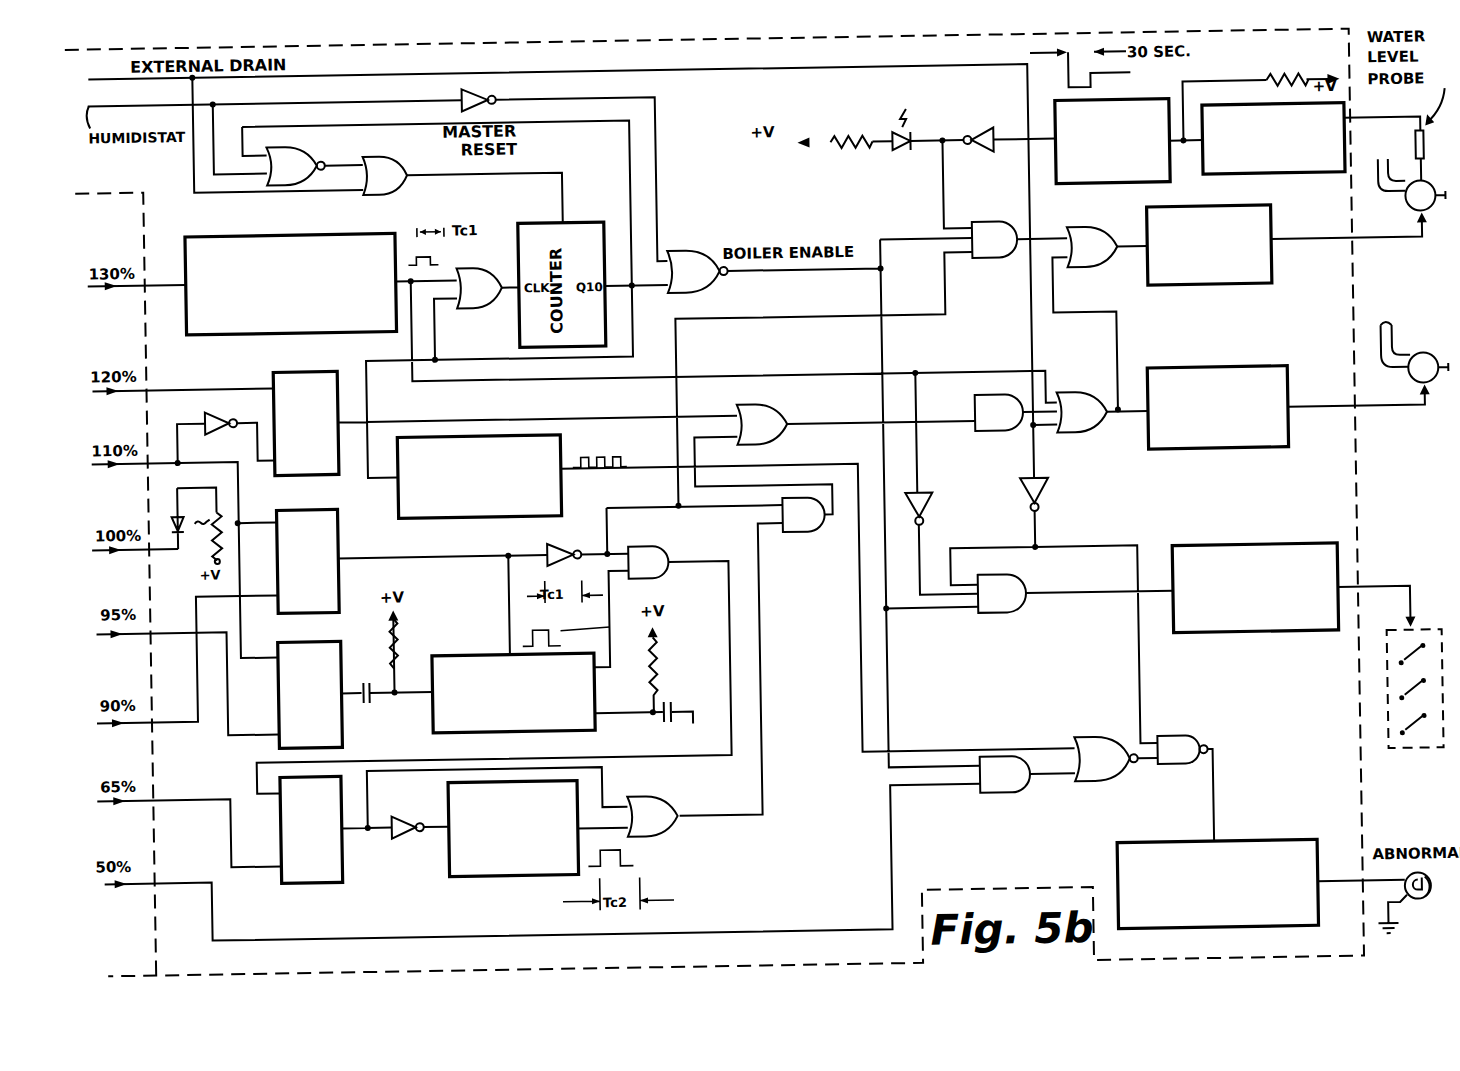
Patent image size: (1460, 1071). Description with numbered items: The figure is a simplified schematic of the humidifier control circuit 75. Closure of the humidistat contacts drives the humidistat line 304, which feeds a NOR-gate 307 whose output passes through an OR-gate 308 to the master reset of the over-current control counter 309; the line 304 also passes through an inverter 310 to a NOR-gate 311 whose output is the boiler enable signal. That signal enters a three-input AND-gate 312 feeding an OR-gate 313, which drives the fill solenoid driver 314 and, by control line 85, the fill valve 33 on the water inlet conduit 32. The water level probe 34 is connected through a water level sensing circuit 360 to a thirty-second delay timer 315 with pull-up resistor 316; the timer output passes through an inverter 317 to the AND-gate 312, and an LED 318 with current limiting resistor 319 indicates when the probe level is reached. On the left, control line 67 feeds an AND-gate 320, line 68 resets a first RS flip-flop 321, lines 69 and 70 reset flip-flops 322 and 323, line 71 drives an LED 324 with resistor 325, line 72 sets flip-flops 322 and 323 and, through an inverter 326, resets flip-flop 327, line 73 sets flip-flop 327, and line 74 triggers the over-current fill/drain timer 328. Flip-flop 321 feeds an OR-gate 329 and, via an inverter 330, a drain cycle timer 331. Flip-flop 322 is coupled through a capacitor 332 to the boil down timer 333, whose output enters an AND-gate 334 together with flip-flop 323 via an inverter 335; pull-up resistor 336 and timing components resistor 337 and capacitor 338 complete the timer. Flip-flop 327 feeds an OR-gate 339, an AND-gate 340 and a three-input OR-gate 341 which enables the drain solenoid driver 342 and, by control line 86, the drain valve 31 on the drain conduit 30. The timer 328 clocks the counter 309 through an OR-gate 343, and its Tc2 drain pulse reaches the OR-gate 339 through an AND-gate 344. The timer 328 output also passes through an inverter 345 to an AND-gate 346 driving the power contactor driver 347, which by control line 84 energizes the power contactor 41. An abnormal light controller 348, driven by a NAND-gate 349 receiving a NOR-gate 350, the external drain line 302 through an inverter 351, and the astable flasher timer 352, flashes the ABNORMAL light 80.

The external drain control line 302 is at (176, 82).
The humidistat line 304 is at (211, 108).
The two-input NOR-gate 307 is at (296, 158).
The two-input OR-gate 308 is at (385, 156).
The over-current control counter 309 is at (579, 232).
The inverter 310 is at (460, 104).
The two-input NOR-gate 311 is at (699, 265).
The three-input AND-gate 312 is at (992, 229).
The two-input OR-gate 313 is at (1090, 234).
The fill solenoid driver 314 is at (1264, 226).
The 30-second delay timer 315 is at (1143, 118).
The pull-up resistor 316 is at (1288, 97).
The inverter 317 is at (992, 133).
The LED 318 is at (900, 162).
The current limiting resistor 319 is at (840, 162).
The two-input AND-gate 320 is at (983, 808).
The first RS flip-flop 321 is at (328, 882).
The RS flip-flop 322 is at (324, 648).
The RS flip-flop 323 is at (328, 514).
The LED 324 is at (162, 536).
The current limiting resistor 325 is at (214, 515).
The inverter 326 is at (218, 410).
The RS flip-flop 327 is at (324, 376).
The over-current fill/drain timer 328 is at (222, 338).
The two-input OR-gate 329 is at (672, 797).
The inverter 330 is at (404, 846).
The drain cycle timer 331 is at (524, 880).
The capacitor 332 is at (356, 712).
The boil down timer 333 is at (450, 727).
The two-input AND-gate 334 is at (649, 554).
The inverter 335 is at (538, 556).
The pull-up resistor 336 is at (396, 660).
The resistor 337 is at (650, 682).
The capacitor 338 is at (664, 713).
The two-input OR-gate 339 is at (776, 409).
The two-input AND-gate 340 is at (982, 448).
The three-input OR-gate 341 is at (1080, 448).
The drain solenoid driver 342 is at (1224, 470).
The two-input OR-gate 343 is at (482, 306).
The two-input AND-gate 344 is at (796, 547).
The inverter 345 is at (926, 516).
The three-input AND-gate 346 is at (994, 626).
The power contactor driver 347 is at (1254, 654).
The abnormal light controller 348 is at (1284, 860).
The two-input NAND-gate 349 is at (1169, 785).
The NOR-gate 350 is at (1091, 798).
The inverter 351 is at (1041, 512).
The astable flasher timer 352 is at (438, 525).
The water level sensing circuit 360 is at (1220, 195).
The drain conduit 30 is at (1380, 348).
The solenoid-controlled drain valve 31 is at (1422, 376).
The water inlet conduit 32 is at (1388, 232).
The solenoid-controlled fill valve 33 is at (1430, 209).
The water level probe 34 is at (1413, 160).
The power contactor 41 is at (1428, 655).
The control line 67 is at (114, 888).
The control line 68 is at (116, 805).
The control line 69 is at (116, 728).
The control line 70 is at (118, 638).
The control line 71 is at (119, 554).
The control line 72 is at (116, 468).
The control line 73 is at (118, 394).
The control line 74 is at (124, 290).
The humidifier control circuit 75 is at (466, 981).
The ABNORMAL light 80 is at (1411, 928).
The control line 84 is at (1386, 596).
The control line 85 is at (1304, 250).
The control line 86 is at (1320, 410).